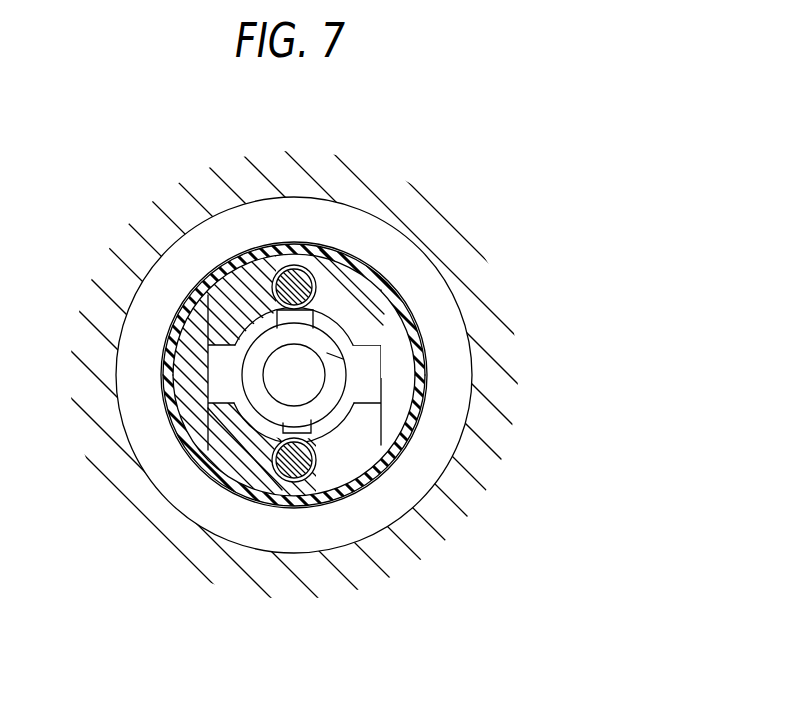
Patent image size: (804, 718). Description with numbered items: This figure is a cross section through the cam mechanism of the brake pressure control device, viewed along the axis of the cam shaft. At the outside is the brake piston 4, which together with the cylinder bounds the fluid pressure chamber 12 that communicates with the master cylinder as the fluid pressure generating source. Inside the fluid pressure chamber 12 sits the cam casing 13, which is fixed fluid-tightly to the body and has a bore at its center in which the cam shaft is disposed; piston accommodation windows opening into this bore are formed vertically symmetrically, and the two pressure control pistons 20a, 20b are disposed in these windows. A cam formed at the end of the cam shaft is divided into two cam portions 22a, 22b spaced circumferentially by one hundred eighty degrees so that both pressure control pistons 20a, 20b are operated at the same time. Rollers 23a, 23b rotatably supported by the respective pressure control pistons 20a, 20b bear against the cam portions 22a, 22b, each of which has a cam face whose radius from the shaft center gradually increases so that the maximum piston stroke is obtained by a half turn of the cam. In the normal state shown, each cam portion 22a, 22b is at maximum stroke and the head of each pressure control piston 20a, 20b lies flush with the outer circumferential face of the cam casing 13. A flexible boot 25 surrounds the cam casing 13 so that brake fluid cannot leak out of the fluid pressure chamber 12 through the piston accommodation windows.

The brake piston 4 is at (240, 190).
The fluid pressure chamber 12 is at (167, 287).
The cam casing 13 is at (394, 353).
The pressure control piston 20a is at (345, 294).
The pressure control piston 20b is at (400, 447).
The cam portion 22a is at (350, 437).
The cam portion 22b is at (272, 413).
The roller 23a is at (303, 244).
The roller 23b is at (282, 475).
The flexible boot 25 is at (396, 336).